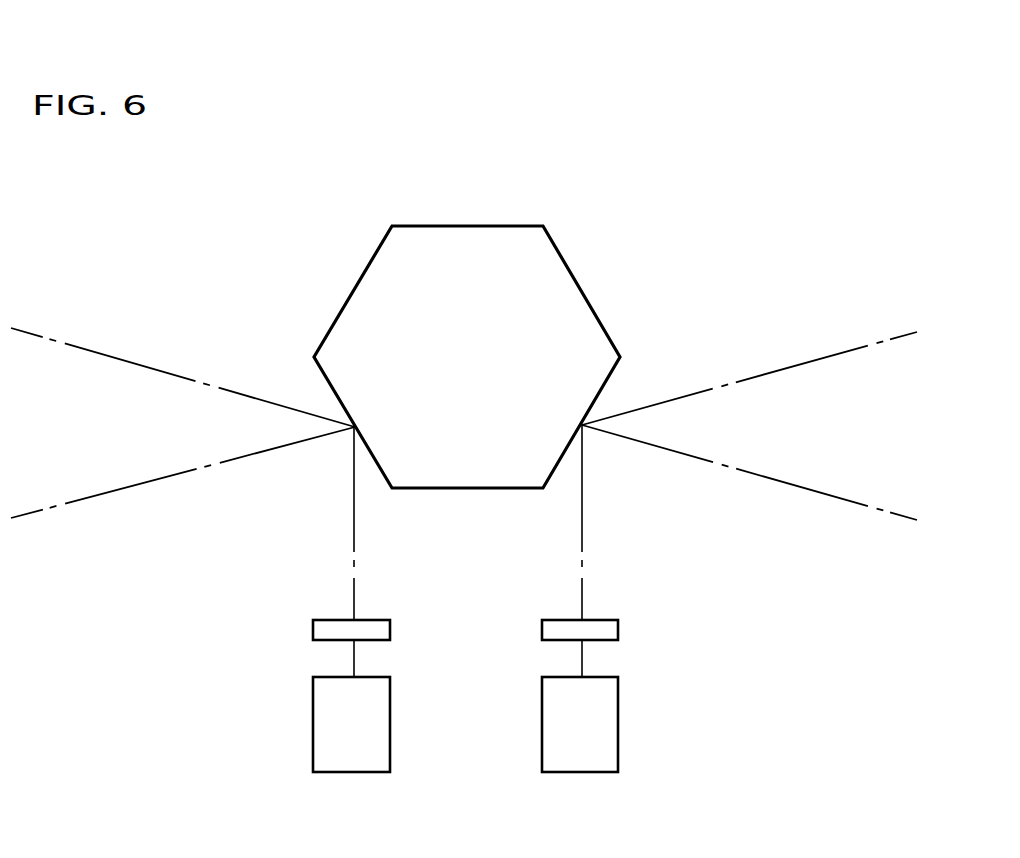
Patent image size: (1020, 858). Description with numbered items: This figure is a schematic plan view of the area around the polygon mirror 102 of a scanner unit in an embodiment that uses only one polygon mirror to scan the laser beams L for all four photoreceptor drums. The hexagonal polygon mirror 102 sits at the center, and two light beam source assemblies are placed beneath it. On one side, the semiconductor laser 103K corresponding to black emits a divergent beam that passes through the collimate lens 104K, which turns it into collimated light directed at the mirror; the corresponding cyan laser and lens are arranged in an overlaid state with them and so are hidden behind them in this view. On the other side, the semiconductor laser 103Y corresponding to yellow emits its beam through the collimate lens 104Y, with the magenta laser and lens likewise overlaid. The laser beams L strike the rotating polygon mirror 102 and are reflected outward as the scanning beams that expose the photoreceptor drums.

The polygon mirror 102 is at (372, 290).
The semiconductor laser 103K is at (326, 693).
The collimate lens 104K is at (317, 620).
The semiconductor laser 103Y is at (604, 697).
The collimate lens 104Y is at (602, 625).
The laser beam L is at (353, 531).